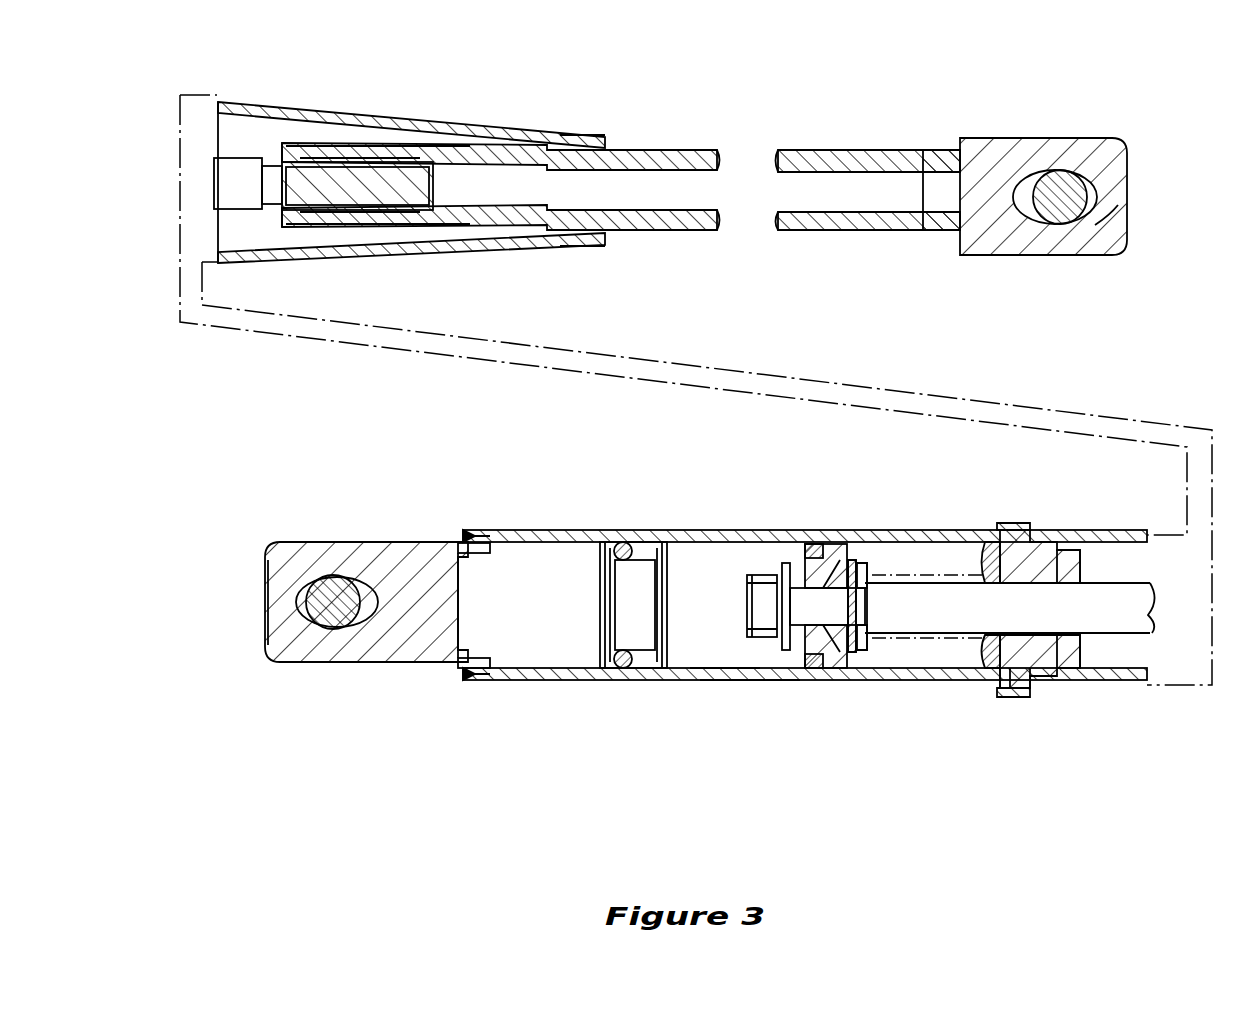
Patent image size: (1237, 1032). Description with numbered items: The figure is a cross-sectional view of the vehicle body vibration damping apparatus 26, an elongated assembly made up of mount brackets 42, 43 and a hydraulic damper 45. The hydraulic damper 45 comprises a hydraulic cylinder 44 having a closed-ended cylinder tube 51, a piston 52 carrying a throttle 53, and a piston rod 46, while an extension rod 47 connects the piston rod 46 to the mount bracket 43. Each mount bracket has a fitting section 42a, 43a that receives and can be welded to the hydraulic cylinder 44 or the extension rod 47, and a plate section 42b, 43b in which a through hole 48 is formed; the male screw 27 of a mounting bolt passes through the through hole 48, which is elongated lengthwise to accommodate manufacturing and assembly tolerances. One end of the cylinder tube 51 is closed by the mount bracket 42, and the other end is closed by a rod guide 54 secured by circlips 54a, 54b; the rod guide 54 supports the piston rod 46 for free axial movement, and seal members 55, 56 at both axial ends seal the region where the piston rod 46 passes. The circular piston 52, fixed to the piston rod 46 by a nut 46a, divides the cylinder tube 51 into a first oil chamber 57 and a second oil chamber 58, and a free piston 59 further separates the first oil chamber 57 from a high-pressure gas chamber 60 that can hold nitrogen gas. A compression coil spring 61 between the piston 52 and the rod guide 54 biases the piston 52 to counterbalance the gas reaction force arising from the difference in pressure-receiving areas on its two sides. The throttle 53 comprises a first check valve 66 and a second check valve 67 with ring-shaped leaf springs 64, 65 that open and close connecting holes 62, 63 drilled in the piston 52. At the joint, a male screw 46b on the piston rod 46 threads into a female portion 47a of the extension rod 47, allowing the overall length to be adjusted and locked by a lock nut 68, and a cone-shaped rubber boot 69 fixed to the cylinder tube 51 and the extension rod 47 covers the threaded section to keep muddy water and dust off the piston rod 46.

The vehicle body vibration damping apparatus 26 is at (598, 106).
The male screw 27 is at (1056, 185).
The mount bracket 42 is at (400, 664).
The fitting section 42a is at (483, 682).
The plate section 42b is at (275, 612).
The mount bracket 43 is at (1035, 257).
The fitting section 43a is at (938, 220).
The plate section 43b is at (1118, 210).
The hydraulic cylinder 44 is at (567, 682).
The hydraulic damper 45 is at (706, 694).
The piston rod 46 is at (237, 200).
The nut 46a is at (782, 552).
The male screw 46b is at (388, 180).
The extension rod 47 is at (825, 232).
The female portion 47a is at (385, 222).
The through hole 48 is at (1098, 200).
The cylinder tube 51 is at (752, 682).
The piston 52 is at (830, 660).
The throttle 53 is at (858, 552).
The rod guide 54 is at (1030, 528).
The circlip 54a is at (1005, 690).
The circlip 54b is at (1022, 696).
The seal member 55 is at (992, 546).
The seal member 56 is at (1075, 548).
The first oil chamber 57 is at (725, 613).
The second oil chamber 58 is at (931, 569).
The free piston 59 is at (683, 633).
The high-pressure gas chamber 60 is at (576, 613).
The compression coil spring 61 is at (990, 652).
The connecting hole 62 is at (812, 655).
The connecting hole 63 is at (838, 546).
The leaf spring 64 is at (852, 652).
The leaf spring 65 is at (808, 556).
The first check valve 66 is at (864, 645).
The second check valve 67 is at (763, 580).
The lock nut 68 is at (303, 222).
The rubber boot 69 is at (276, 103).